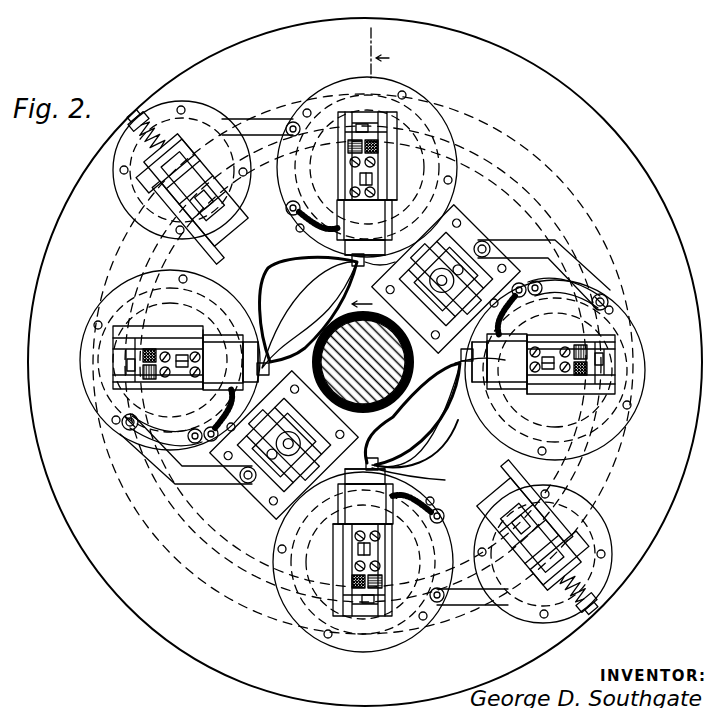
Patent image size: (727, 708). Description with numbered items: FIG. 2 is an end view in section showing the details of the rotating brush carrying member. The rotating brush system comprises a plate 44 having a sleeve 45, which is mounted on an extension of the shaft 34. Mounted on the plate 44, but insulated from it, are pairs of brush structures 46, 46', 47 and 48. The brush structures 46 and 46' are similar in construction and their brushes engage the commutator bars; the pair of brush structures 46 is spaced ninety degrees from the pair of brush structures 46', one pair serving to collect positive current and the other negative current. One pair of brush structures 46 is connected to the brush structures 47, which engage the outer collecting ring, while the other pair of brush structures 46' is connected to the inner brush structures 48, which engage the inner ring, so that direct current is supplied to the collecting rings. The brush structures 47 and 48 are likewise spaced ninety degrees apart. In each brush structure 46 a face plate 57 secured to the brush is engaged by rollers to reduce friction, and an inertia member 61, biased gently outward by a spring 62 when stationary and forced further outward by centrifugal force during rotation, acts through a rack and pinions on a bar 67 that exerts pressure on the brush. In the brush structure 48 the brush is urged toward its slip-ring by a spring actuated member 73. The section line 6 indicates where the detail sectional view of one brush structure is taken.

The plate 44 is at (92, 545).
The brush structure 46 is at (365, 376).
The brush structure 46' is at (363, 362).
The brush structure 47 is at (203, 108).
The brush structure 48 is at (458, 233).
The face plate 57 is at (378, 146).
The spring 62 is at (348, 146).
The bar 67 is at (360, 179).
The inertia member 61 is at (340, 268).
The shaft 34 is at (340, 318).
The sleeve 45 is at (375, 425).
The spring actuated member 73 is at (432, 298).
The section line 6 is at (376, 172).